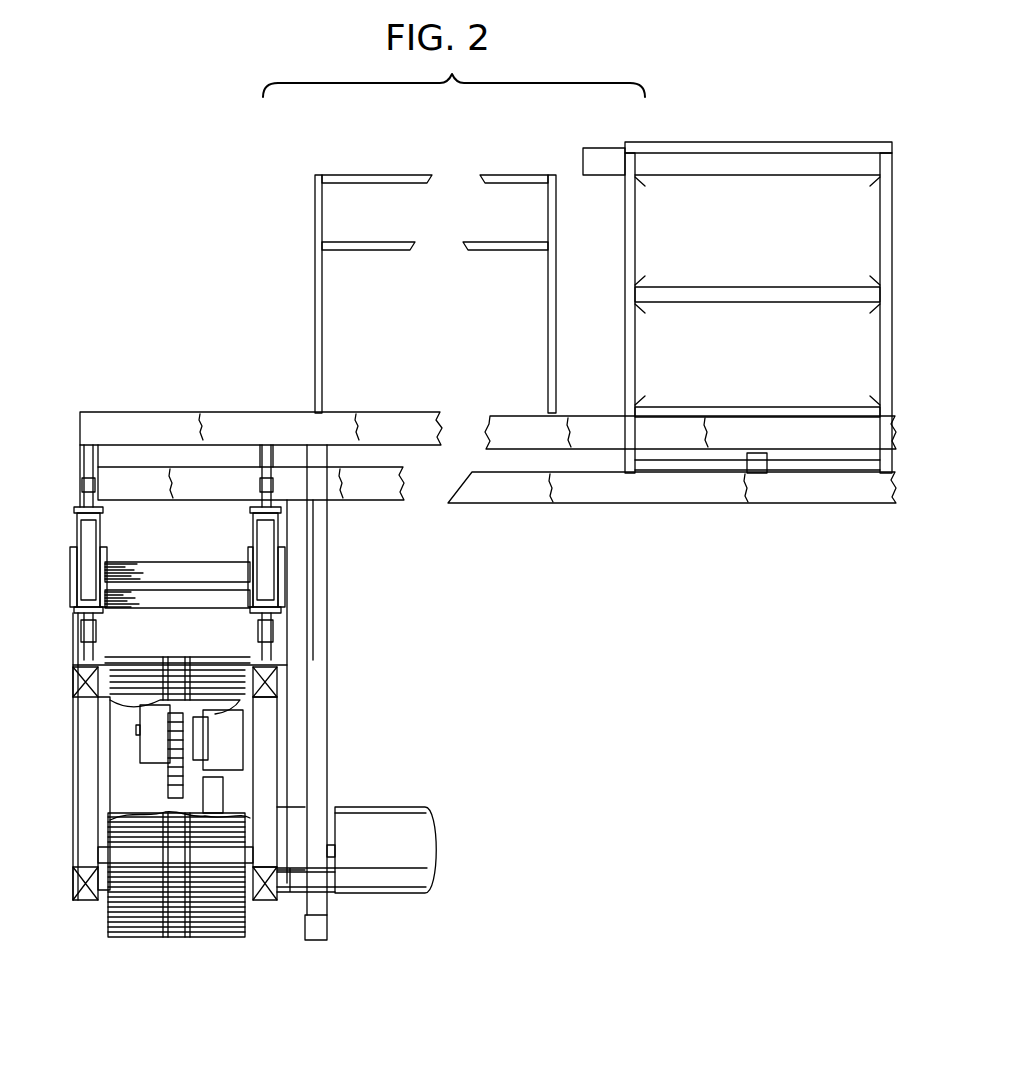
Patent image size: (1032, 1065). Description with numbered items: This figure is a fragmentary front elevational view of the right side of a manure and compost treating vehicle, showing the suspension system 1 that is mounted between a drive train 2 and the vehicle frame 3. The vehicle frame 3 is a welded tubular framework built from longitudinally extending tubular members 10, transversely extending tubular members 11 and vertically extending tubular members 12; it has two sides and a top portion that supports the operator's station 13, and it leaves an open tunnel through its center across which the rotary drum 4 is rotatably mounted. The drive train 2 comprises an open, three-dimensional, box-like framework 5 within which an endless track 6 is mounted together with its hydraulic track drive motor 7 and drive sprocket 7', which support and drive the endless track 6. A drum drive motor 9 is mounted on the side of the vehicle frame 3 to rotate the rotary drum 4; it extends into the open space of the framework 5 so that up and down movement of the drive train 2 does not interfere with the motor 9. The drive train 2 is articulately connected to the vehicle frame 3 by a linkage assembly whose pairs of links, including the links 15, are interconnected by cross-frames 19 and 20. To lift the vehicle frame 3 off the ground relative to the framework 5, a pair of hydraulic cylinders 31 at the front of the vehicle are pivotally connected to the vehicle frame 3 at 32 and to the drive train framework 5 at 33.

The suspension system 1 is at (150, 551).
The drive train 2 is at (290, 718).
The vehicle frame 3 is at (272, 306).
The rotary drum 4 is at (389, 865).
The framework 5 is at (275, 693).
The endless track 6 is at (146, 940).
The hydraulic track drive motor 7 is at (135, 741).
The drive sprocket 7' is at (145, 758).
The drum drive motor 9 is at (290, 898).
The longitudinally extending tubular members 10 is at (318, 929).
The transversely extending tubular members 11 is at (287, 446).
The vertically extending tubular members 12 is at (317, 621).
The operator's station 13 is at (590, 208).
The links 15 is at (105, 571).
The cross-frame 19 is at (190, 571).
The cross-frame 20 is at (200, 603).
The hydraulic cylinders 31 is at (100, 528).
The pivotal connection 32 is at (97, 497).
The pivotal connection 33 is at (96, 631).